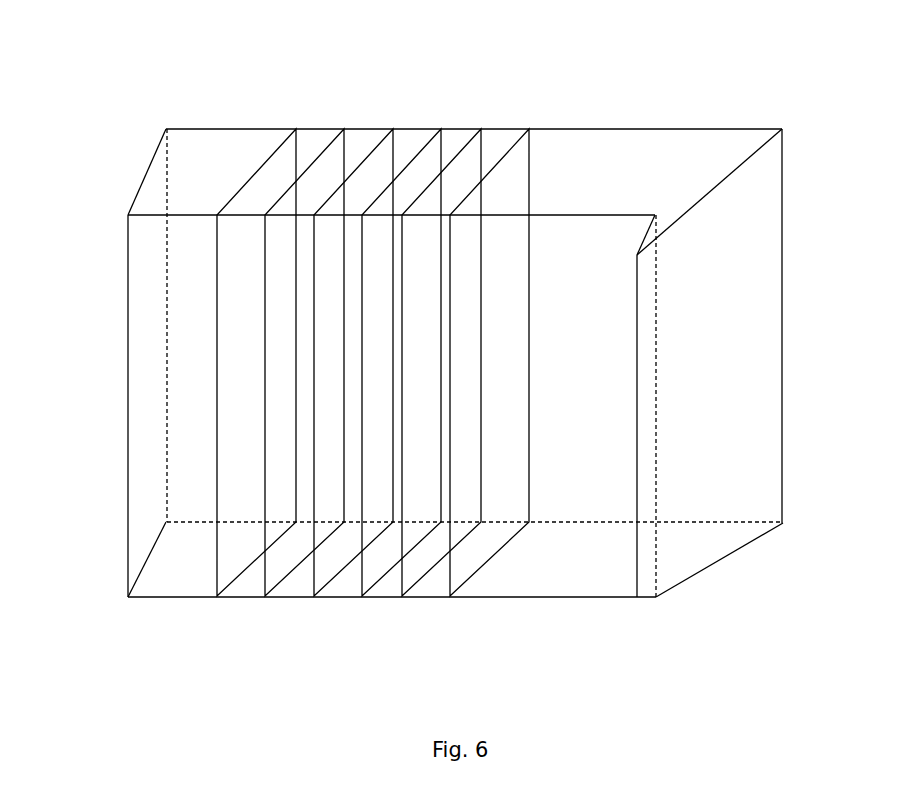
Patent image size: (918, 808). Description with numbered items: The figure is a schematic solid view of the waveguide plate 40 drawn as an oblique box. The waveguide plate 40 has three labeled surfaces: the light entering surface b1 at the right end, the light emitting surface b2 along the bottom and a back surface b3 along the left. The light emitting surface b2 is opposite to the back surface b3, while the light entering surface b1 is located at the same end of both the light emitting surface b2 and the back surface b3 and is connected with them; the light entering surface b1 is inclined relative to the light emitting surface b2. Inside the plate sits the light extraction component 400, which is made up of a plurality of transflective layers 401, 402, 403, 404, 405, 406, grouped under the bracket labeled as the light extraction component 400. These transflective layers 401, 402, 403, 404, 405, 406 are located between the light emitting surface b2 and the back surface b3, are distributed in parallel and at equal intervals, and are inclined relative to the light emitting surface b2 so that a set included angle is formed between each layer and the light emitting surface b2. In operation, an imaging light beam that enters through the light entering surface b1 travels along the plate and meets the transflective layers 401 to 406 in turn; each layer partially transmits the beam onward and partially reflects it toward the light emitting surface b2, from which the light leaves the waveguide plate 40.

The waveguide plate 40 is at (697, 128).
The light extraction component 400 is at (497, 53).
The transflective layer 401 is at (497, 164).
The transflective layer 402 is at (451, 162).
The transflective layer 403 is at (410, 163).
The transflective layer 404 is at (362, 163).
The transflective layer 405 is at (315, 161).
The transflective layer 406 is at (259, 168).
The light entering surface b1 is at (743, 346).
The light emitting surface b2 is at (186, 567).
The back surface b3 is at (198, 275).